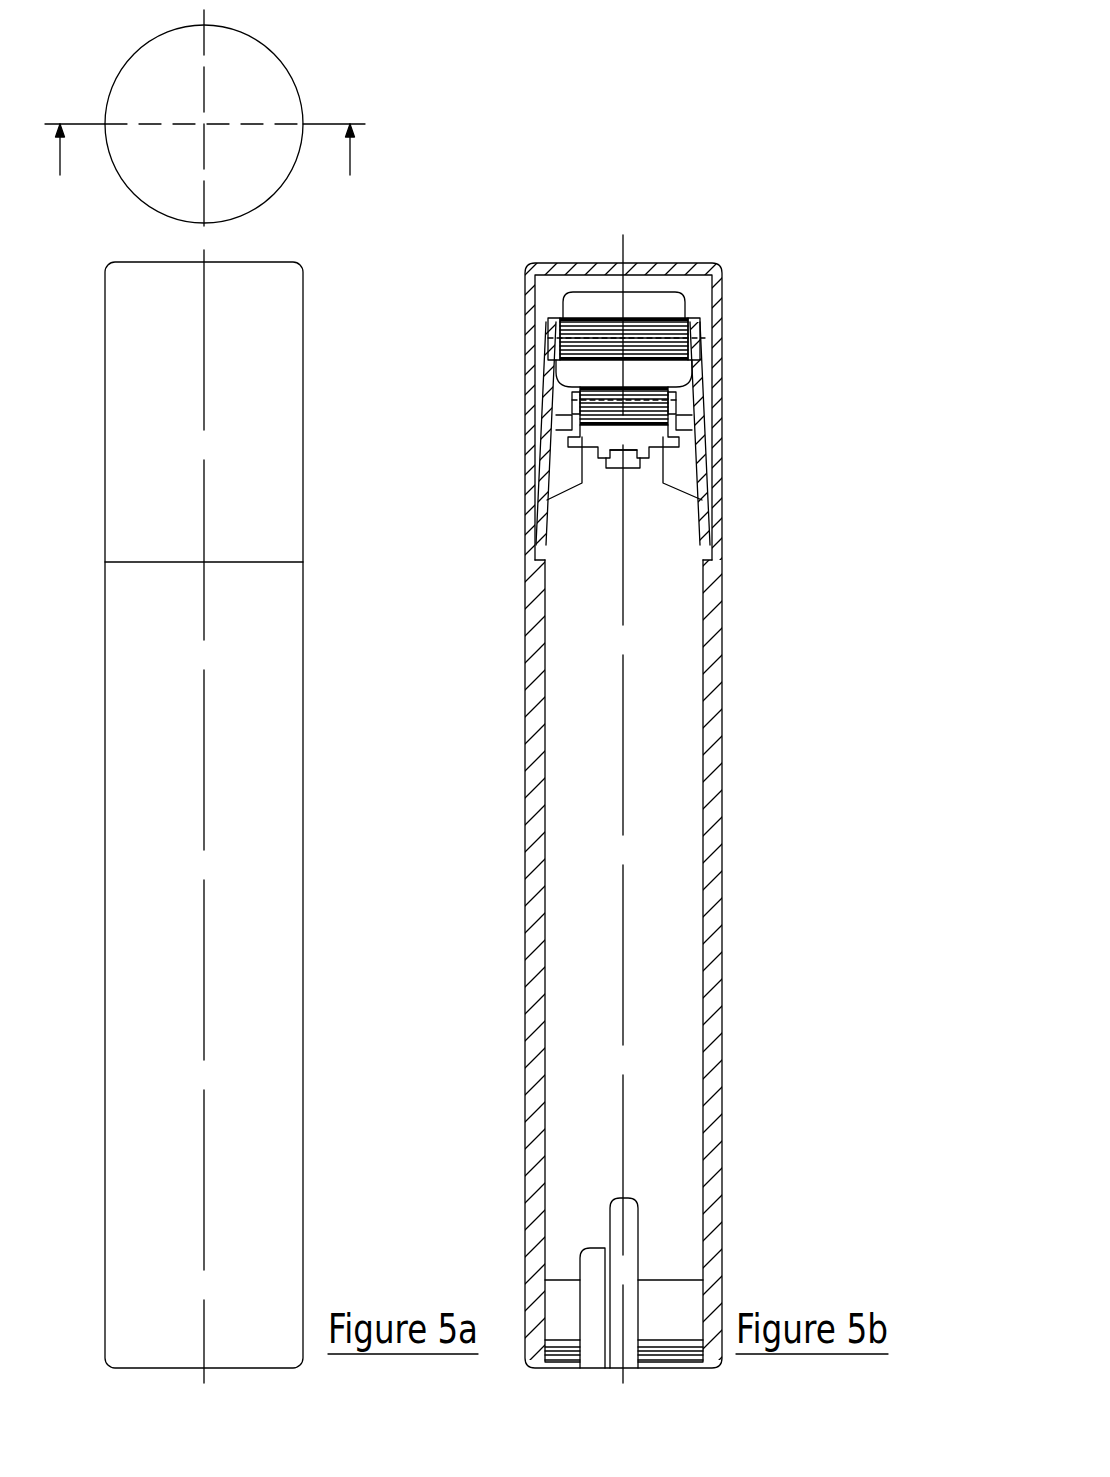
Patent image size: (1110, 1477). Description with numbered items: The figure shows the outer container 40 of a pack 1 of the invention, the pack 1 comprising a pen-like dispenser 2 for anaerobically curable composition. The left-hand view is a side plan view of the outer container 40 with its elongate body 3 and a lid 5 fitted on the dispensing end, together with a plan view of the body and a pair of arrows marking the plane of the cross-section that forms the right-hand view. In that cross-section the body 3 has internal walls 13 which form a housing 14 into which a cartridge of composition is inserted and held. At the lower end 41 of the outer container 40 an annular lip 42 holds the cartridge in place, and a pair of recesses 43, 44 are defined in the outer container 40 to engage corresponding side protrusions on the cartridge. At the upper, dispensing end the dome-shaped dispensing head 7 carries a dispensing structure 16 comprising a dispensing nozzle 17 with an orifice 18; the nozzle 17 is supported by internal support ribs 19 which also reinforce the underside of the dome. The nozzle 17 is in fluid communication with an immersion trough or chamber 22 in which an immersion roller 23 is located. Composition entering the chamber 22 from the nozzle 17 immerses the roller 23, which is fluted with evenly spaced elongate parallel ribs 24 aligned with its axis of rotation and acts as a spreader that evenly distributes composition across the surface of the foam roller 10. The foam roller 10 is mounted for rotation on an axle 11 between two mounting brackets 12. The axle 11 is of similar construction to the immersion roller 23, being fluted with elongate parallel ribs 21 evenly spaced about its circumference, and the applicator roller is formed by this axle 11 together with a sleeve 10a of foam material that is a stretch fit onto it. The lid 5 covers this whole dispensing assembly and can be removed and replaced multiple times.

In FIG. 5A, the pack 1 is at (203, 696).
In FIG. 5A, the dispenser 2 is at (208, 696).
In FIG. 5A, the elongate body 3 is at (278, 62).
In FIG. 5B, the elongate body 3 is at (635, 809).
In FIG. 5A, the lid 5 is at (285, 457).
In FIG. 5B, the lid 5 is at (625, 408).
In FIG. 5B, the dispensing head 7 is at (707, 452).
In FIG. 5B, the foam roller 10 is at (626, 246).
In FIG. 5B, the sleeve of foam material 10a is at (598, 305).
In FIG. 5B, the axle 11 is at (631, 286).
In FIG. 5B, the mounting brackets 12 is at (527, 325).
In FIG. 5B, the internal walls 13 is at (700, 1027).
In FIG. 5B, the housing 14 is at (660, 904).
In FIG. 5B, the dispensing structure 16 is at (617, 520).
In FIG. 5B, the dispensing nozzle 17 is at (620, 458).
In FIG. 5B, the orifice 18 is at (629, 476).
In FIG. 5B, the internal support ribs 19 is at (573, 483).
In FIG. 5B, the elongate parallel ribs 21 is at (631, 280).
In FIG. 5B, the immersion trough or chamber 22 is at (677, 400).
In FIG. 5B, the immersion roller 23 is at (625, 379).
In FIG. 5B, the elongate parallel ribs 24 is at (603, 395).
In FIG. 5A, the outer container 40 is at (203, 696).
In FIG. 5B, the outer container 40 is at (625, 778).
In FIG. 5B, the lower end 41 is at (640, 1268).
In FIG. 5B, the annular lip 42 is at (685, 1347).
In FIG. 5B, the recess 43 is at (593, 1297).
In FIG. 5B, the recess 44 is at (625, 1237).